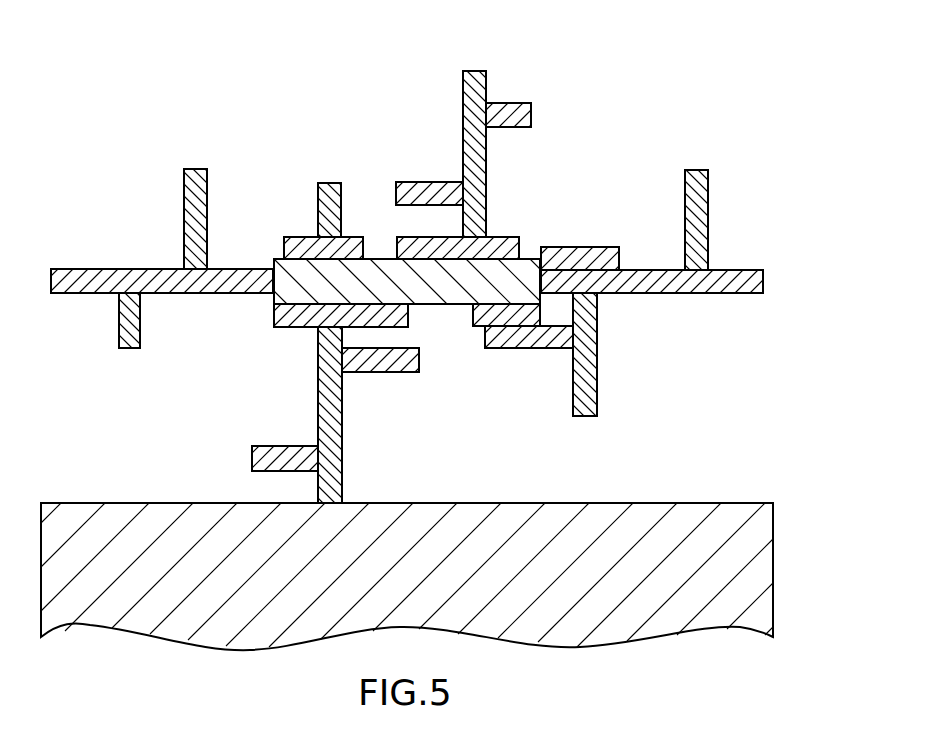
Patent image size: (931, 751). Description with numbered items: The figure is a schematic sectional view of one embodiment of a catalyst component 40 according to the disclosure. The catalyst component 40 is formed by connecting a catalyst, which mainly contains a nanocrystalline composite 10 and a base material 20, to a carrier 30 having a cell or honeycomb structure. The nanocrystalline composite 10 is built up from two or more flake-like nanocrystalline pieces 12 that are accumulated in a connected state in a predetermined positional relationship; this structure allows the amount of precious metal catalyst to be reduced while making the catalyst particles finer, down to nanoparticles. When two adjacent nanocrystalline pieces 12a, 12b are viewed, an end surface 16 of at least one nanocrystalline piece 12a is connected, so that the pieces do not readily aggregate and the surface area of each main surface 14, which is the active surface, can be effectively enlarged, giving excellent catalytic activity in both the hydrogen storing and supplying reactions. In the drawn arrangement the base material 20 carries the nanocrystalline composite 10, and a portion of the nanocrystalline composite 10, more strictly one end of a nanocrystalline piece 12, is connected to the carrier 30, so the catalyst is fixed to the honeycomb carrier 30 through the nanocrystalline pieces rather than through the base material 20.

The nanocrystalline composite 10 is at (468, 122).
The nanocrystalline piece 12 is at (75, 270).
The nanocrystalline piece 12a is at (523, 105).
The nanocrystalline piece 12b is at (466, 75).
The main surface 14 is at (737, 268).
The end surface 16 is at (765, 280).
The base material 20 is at (309, 284).
The carrier 30 is at (643, 520).
The catalyst component 40 is at (643, 126).